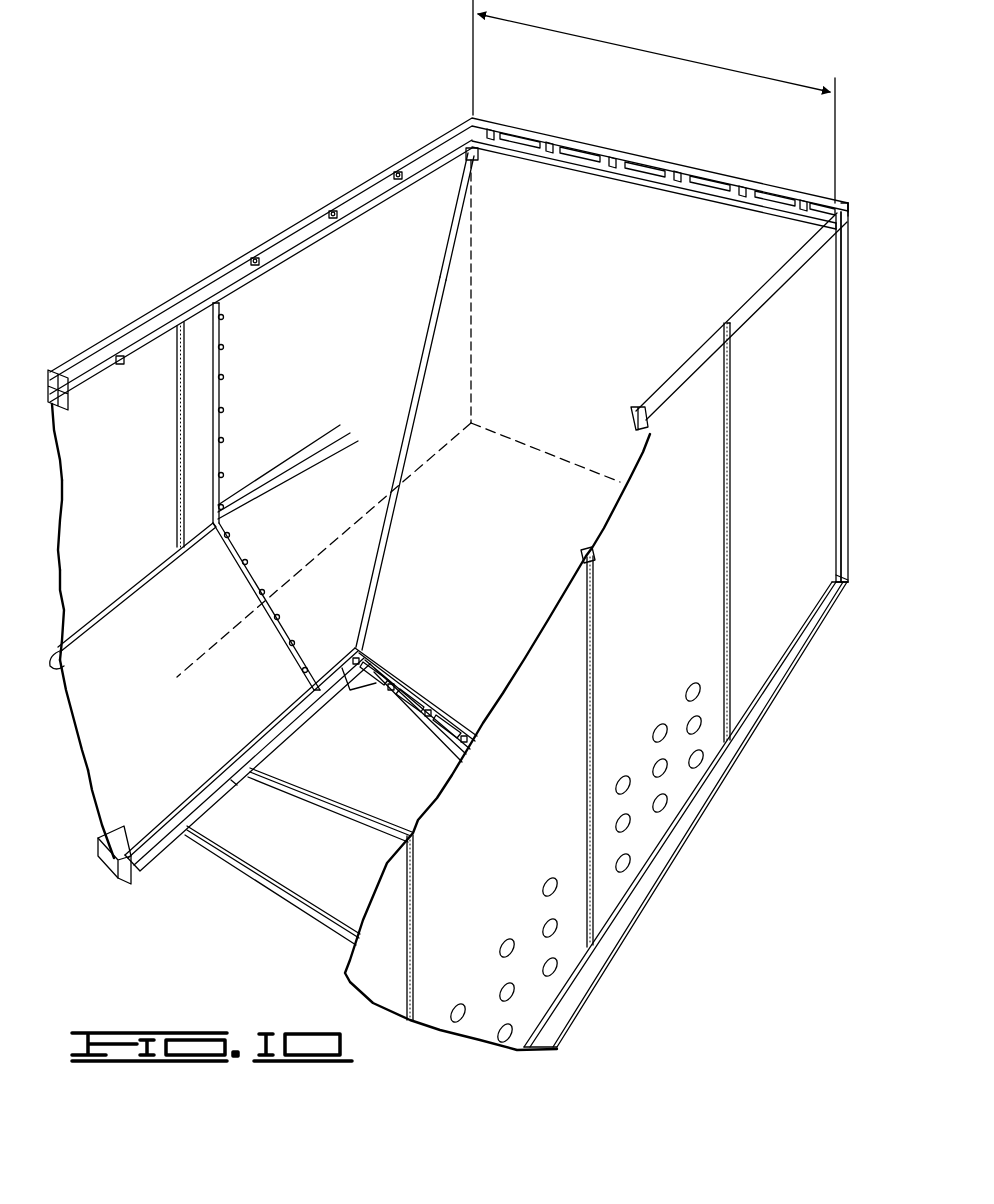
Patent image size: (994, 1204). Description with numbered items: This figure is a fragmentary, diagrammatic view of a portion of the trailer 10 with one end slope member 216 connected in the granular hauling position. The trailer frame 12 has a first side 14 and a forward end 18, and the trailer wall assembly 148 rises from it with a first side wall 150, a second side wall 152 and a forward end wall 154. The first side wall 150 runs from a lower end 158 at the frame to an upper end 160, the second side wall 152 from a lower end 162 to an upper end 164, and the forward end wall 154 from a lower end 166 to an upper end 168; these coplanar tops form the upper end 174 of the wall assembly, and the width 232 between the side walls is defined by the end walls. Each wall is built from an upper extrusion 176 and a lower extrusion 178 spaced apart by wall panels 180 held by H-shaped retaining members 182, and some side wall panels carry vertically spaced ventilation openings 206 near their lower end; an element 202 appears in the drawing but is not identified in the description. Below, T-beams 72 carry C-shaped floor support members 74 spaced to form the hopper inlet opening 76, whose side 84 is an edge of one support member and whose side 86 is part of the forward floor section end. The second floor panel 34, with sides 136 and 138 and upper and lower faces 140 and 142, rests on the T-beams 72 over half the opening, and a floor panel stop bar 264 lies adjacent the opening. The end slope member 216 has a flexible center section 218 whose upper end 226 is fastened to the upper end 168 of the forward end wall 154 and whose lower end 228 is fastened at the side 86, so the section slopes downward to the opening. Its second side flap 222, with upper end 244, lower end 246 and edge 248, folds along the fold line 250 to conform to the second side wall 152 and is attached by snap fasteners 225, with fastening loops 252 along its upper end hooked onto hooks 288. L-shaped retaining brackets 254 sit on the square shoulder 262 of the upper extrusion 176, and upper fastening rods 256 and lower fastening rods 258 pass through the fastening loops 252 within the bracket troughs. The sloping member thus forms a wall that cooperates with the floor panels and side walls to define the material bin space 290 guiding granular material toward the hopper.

The trailer 10 is at (357, 150).
The trailer frame 12 is at (632, 914).
The first side 14 is at (707, 798).
The forward end 18 is at (852, 582).
The second floor panel 34 is at (105, 717).
The T-beams 72 is at (253, 862).
The floor support members 74 is at (153, 850).
The hopper inlet opening 76 is at (233, 788).
The side of opening 84 is at (205, 805).
The side of opening 86 is at (406, 702).
The side of second floor panel 136 is at (110, 876).
The side of second floor panel 138 is at (150, 578).
The upper face 140 is at (60, 670).
The lower face 142 is at (118, 765).
The trailer wall assembly 148 is at (50, 428).
The first side wall 150 is at (814, 393).
The second side wall 152 is at (92, 455).
The forward end wall 154 is at (690, 163).
The lower end of first side wall 158 is at (797, 647).
The upper end of first side wall 160 is at (782, 303).
The lower end of second side wall 162 is at (320, 568).
The upper end of second side wall 164 is at (50, 377).
The lower end of forward end wall 166 is at (515, 455).
The upper end of forward end wall 168 is at (838, 205).
The upper end of trailer wall assembly 174 is at (240, 246).
The upper extrusion 176 is at (120, 327).
The lower extrusion 178 is at (647, 875).
The wall panels 180 is at (85, 490).
The H-shaped retaining members 182 is at (178, 392).
The corner post 202 is at (855, 242).
The ventilation openings 206 is at (544, 890).
The end slope member 216 is at (432, 186).
The center section 218 is at (605, 178).
The second side flap 222 is at (233, 302).
The snap-fasteners 225 is at (225, 378).
The upper end of center section 226 is at (623, 182).
The lower end of center section 228 is at (421, 682).
The width between side walls 232 is at (646, 52).
The upper end of second side flap 244 is at (292, 220).
The lower end of second side flap 246 is at (314, 678).
The edge of second side flap 248 is at (235, 563).
The fold line 250 is at (440, 318).
The fastening loops 252 is at (334, 222).
The L-shaped retaining brackets 254 is at (577, 160).
The upper fastening rods 256 is at (778, 200).
The lower fastening rods 258 is at (345, 678).
The shoulder 262 is at (122, 364).
The floor panel stop bar 264 is at (158, 830).
The hooks 288 is at (398, 172).
The material bin space 290 is at (650, 352).